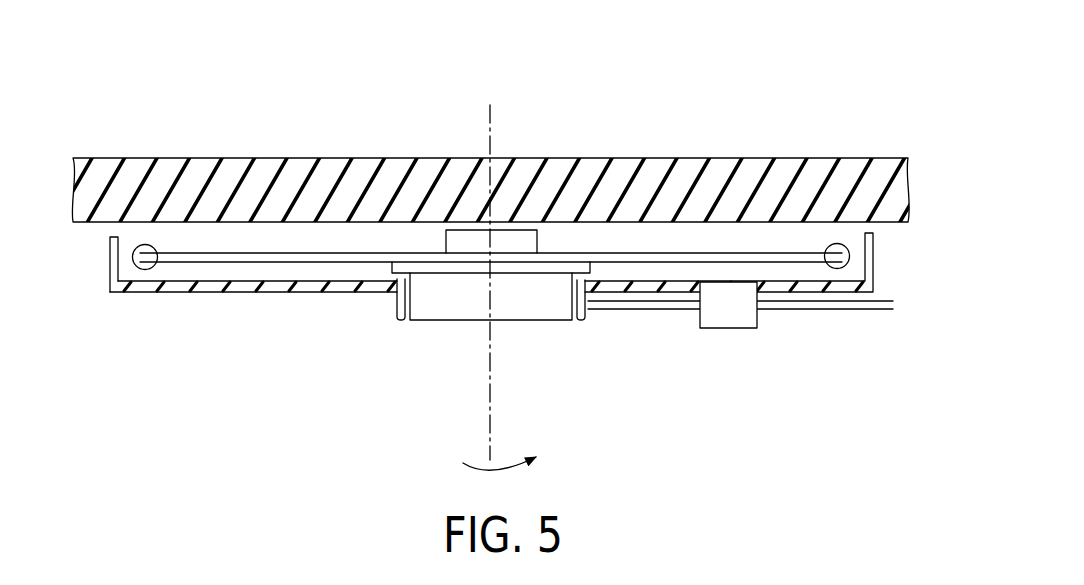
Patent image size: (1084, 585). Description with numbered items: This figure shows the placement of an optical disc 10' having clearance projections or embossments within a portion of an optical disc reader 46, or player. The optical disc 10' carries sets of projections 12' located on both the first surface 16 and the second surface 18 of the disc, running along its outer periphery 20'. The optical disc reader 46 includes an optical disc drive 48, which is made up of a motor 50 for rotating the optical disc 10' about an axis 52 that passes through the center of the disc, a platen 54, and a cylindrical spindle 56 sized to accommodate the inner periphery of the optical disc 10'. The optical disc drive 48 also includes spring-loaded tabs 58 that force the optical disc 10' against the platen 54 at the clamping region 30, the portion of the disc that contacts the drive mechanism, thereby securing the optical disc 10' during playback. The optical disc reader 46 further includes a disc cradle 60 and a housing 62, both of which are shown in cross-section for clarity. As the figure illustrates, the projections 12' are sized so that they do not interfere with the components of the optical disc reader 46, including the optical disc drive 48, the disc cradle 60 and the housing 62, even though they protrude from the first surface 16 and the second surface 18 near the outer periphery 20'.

The optical disc 10' is at (667, 184).
The sets of projections 12' is at (481, 286).
The first surface 16 is at (236, 264).
The second surface 18 is at (299, 252).
The outer periphery 20' is at (92, 264).
The clamping region 30 is at (443, 263).
The optical disc reader 46 is at (732, 105).
The optical disc drive 48 is at (558, 335).
The motor 50 is at (440, 323).
The axis 52 is at (493, 392).
The platen 54 is at (400, 278).
The cylindrical spindle 56 is at (503, 240).
The spring-loaded tabs 58 is at (443, 250).
The disc cradle 60 is at (873, 275).
The housing 62 is at (143, 170).